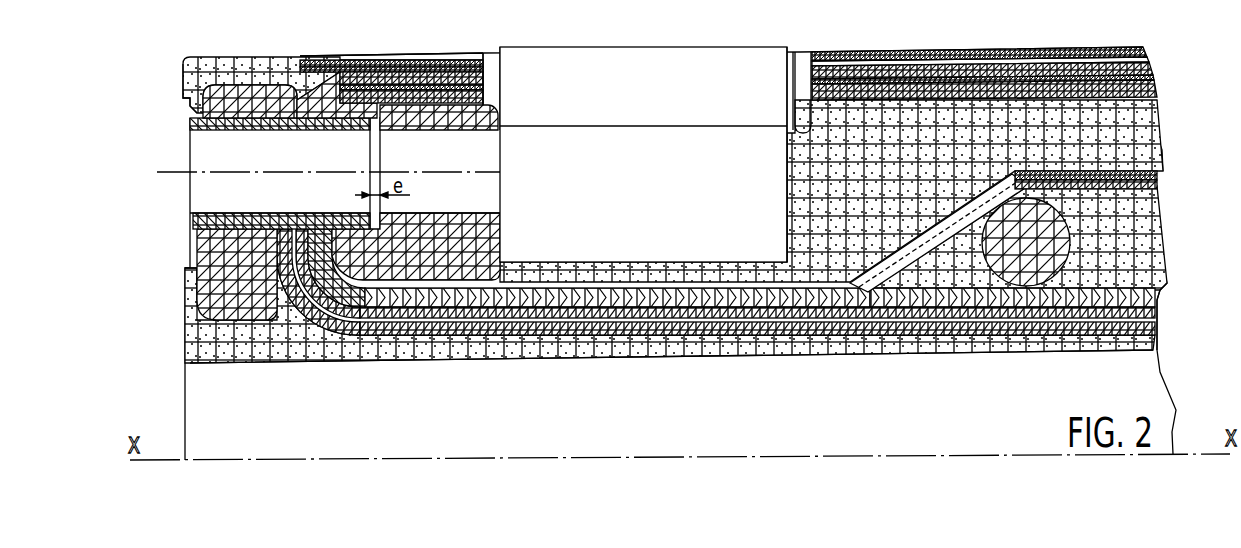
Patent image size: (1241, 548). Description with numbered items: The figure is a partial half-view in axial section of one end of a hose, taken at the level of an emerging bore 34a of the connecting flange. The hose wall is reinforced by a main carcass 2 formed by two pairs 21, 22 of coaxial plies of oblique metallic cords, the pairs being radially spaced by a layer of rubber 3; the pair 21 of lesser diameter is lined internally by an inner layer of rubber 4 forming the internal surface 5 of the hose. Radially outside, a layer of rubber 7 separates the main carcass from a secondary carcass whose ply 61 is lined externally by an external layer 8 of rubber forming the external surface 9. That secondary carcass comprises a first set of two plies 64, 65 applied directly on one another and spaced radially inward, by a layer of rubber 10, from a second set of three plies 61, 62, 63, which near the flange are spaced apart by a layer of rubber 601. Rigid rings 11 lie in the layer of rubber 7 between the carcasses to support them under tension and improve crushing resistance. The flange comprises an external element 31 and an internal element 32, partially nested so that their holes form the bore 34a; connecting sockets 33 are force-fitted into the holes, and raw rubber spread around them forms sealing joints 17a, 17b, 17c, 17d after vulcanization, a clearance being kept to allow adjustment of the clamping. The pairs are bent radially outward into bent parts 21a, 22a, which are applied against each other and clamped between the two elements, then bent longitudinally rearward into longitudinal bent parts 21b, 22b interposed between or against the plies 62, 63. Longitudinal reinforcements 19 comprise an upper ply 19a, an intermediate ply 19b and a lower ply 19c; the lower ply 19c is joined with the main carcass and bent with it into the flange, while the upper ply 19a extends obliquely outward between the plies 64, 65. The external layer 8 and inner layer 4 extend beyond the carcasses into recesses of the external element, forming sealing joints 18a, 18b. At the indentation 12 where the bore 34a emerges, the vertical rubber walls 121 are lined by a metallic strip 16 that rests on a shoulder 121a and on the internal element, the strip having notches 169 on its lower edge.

The main carcass 2 is at (630, 330).
The layer of rubber 3 is at (273, 68).
The inner layer of rubber 4 is at (760, 338).
The internal surface 5 is at (810, 347).
The layer of rubber 7 is at (1125, 231).
The external layer of rubber 8 is at (398, 100).
The external surface 9 is at (460, 70).
The layer of rubber 10 is at (1150, 120).
The rigid rings 11 is at (1027, 270).
The indentations 12 is at (587, 157).
The metallic strip 16 is at (664, 87).
The sealing joint 17a is at (363, 113).
The sealing joint 17b is at (373, 294).
The sealing joint 17c is at (207, 230).
The sealing joint 17d is at (190, 124).
The sealing joint 18a is at (183, 88).
The sealing joint 18b is at (188, 303).
The longitudinal reinforcements 19 is at (447, 303).
The upper ply 19a is at (858, 284).
The intermediate ply 19b is at (987, 303).
The lower ply 19c is at (1216, 299).
The pair of plies 21 is at (550, 328).
The bent part 21a is at (295, 302).
The longitudinal bent part 21b is at (489, 38).
The pair of plies 22 is at (500, 313).
The bent part 22a is at (306, 292).
The longitudinal bent part 22b is at (432, 92).
The external element 31 is at (243, 303).
The internal element 32 is at (395, 258).
The connecting sockets 33 is at (240, 116).
The emerging bore 34a is at (212, 160).
The ply 61 is at (871, 53).
The ply 62 is at (906, 63).
The ply 63 is at (943, 80).
The ply 64 is at (1153, 173).
The ply 65 is at (1150, 190).
The vertical rubber walls 121 is at (785, 163).
The shoulder 121a is at (840, 34).
The notches 169 is at (500, 106).
The layer of rubber 601 is at (996, 58).